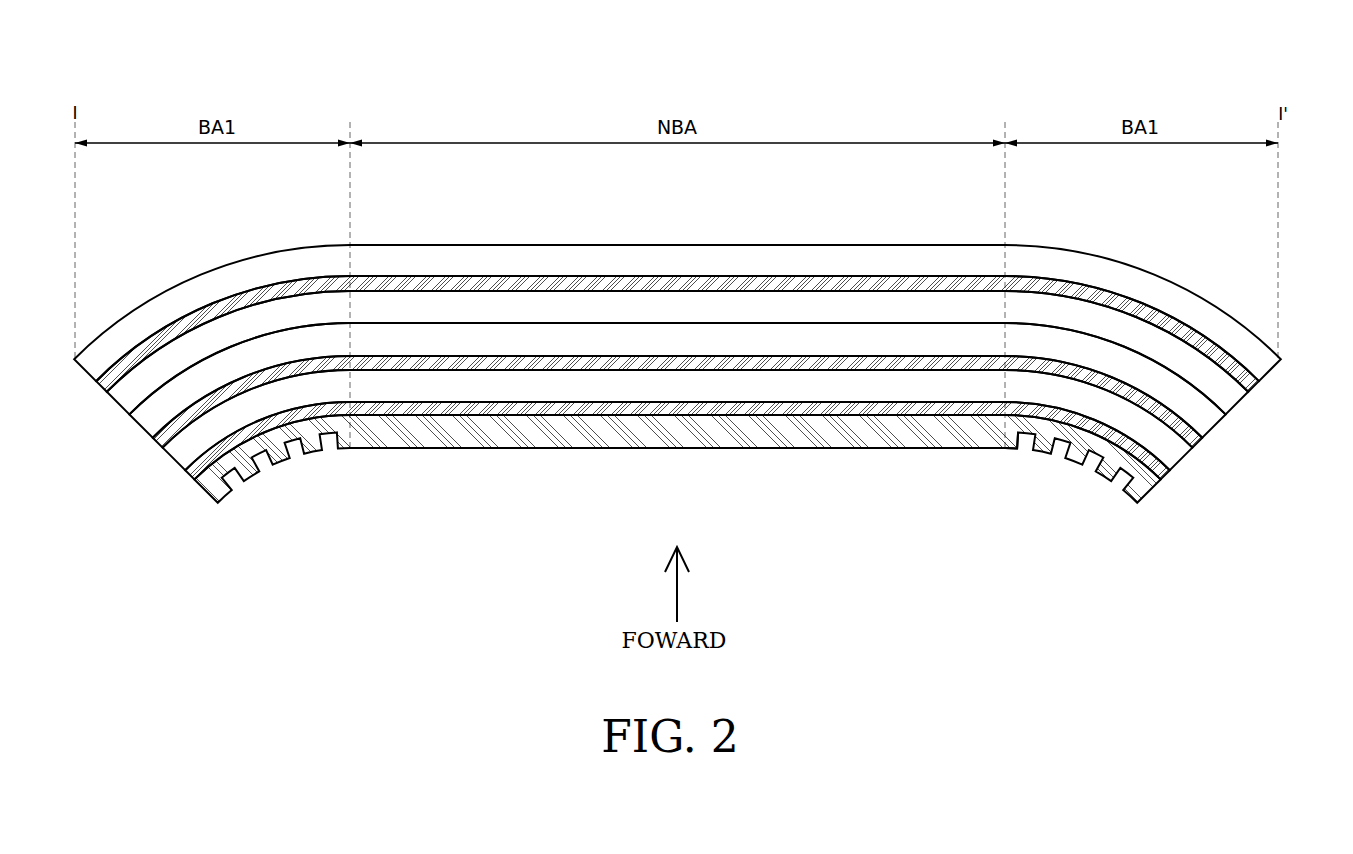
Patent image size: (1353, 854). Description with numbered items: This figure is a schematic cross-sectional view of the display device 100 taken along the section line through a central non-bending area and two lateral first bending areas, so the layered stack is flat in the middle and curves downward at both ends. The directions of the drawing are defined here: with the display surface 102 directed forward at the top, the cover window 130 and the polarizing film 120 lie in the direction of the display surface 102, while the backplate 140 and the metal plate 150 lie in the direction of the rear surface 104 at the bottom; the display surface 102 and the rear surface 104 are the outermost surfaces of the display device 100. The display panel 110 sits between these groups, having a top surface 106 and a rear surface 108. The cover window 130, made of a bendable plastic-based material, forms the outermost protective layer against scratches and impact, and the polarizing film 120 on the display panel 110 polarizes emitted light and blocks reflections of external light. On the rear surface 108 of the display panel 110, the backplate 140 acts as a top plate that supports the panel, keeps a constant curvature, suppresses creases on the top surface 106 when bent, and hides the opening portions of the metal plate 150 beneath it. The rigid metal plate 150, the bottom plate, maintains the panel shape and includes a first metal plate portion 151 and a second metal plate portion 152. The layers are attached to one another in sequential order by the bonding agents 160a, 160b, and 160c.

The display device 100 is at (1212, 66).
The display surface 102 is at (589, 244).
The rear surface 104 is at (471, 447).
The top surface of the display panel 106 is at (738, 323).
The rear surface of the display panel 108 is at (710, 357).
The display panel 110 is at (1214, 426).
The polarizing film 120 is at (1238, 402).
The cover window 130 is at (1270, 370).
The backplate 140 is at (1180, 460).
The metal plate 150 is at (865, 517).
The first metal plate portion 151 is at (860, 449).
The second metal plate portion 152 is at (1031, 449).
The bonding agent 160a is at (1254, 386).
The bonding agent 160b is at (1197, 443).
The bonding agent 160c is at (1165, 475).